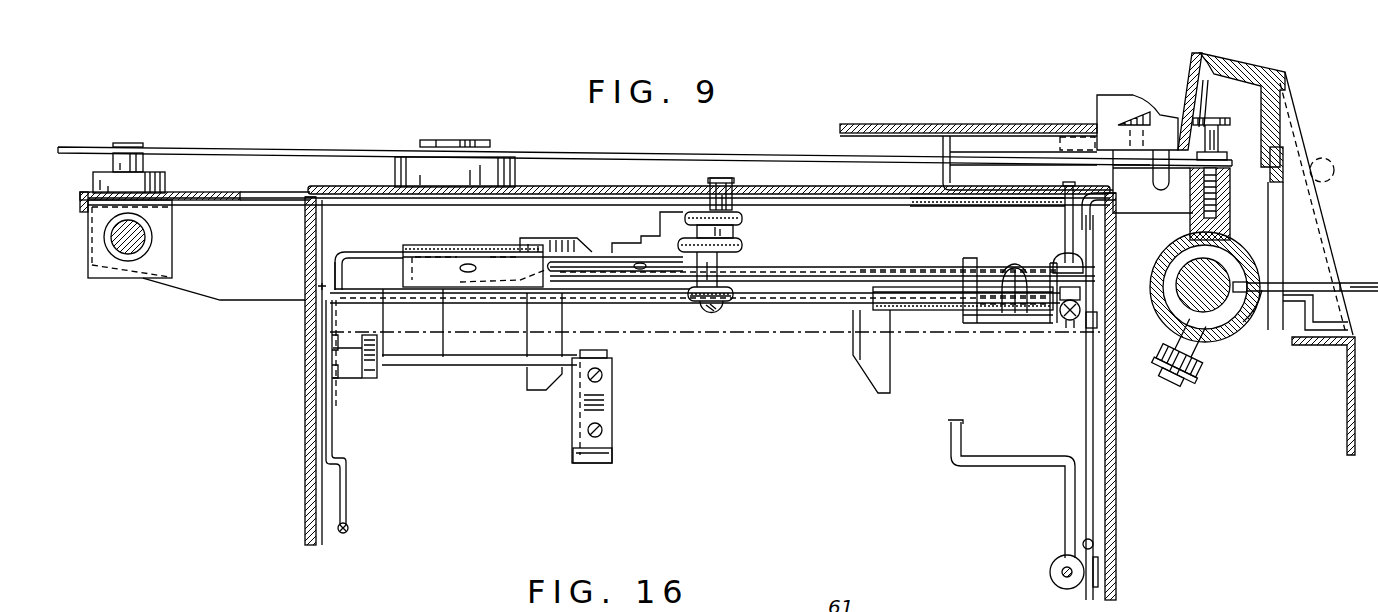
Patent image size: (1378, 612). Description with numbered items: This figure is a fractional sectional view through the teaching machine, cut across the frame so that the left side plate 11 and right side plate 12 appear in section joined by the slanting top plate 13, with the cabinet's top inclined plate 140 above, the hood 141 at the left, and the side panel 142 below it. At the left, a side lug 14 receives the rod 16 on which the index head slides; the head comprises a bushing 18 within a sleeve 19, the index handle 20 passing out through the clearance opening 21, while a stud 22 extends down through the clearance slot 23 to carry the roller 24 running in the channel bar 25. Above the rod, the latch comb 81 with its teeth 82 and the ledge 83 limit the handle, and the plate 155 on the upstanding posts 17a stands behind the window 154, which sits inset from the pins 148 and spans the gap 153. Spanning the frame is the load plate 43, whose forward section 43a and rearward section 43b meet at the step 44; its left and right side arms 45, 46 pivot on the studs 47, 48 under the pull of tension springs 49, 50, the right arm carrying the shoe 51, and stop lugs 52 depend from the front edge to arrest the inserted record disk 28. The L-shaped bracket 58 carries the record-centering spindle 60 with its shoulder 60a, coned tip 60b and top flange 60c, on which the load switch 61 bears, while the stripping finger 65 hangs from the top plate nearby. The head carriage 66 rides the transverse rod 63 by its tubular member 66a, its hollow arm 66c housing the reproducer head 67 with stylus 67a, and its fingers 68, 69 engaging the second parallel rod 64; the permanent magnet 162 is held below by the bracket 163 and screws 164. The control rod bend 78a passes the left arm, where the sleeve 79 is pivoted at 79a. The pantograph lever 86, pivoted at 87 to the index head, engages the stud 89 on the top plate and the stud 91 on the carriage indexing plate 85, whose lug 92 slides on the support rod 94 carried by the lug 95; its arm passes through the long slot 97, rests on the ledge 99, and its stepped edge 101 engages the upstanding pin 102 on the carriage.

The left side plate 11 is at (1116, 472).
The right side plate 12 is at (303, 449).
The top plate 13 is at (781, 193).
The side lug 14 is at (1167, 213).
The rod 16 is at (1211, 326).
The upstanding posts 17a is at (1208, 133).
The bushing 18 is at (1168, 328).
The sleeve 19 is at (1183, 240).
The index handle 20 is at (1375, 285).
The clearance opening 21 is at (1257, 275).
The stud 22 is at (1210, 352).
The clearance slot 23 is at (1244, 321).
The roller 24 is at (1198, 372).
The channel bar 25 is at (1183, 371).
The phonograph record disk 28 is at (738, 336).
The load plate 43 is at (794, 265).
The forward section 43a is at (866, 244).
The rearward right-half section 43b is at (372, 252).
The step 44 is at (337, 256).
The left side arm 45 is at (1093, 544).
The right side arm 46 is at (333, 432).
The stud 47 is at (1098, 320).
The stud 48 is at (305, 319).
The tension spring 49 is at (1093, 546).
The tension spring 50 is at (347, 529).
The shoe 51 is at (366, 380).
The stop lugs 52 is at (537, 377).
The L-shaped bracket 58 is at (639, 246).
The record-centering spindle 60 is at (724, 290).
The shoulder 60a is at (797, 335).
The coned tip 60b is at (708, 310).
The top flange 60c is at (744, 221).
The load switch 61 is at (556, 238).
The transverse rod 63 is at (430, 300).
The second parallel rod 64 is at (943, 277).
The stripping finger 65 is at (712, 183).
The head carriage 66 is at (978, 264).
The transverse tubular member 66a is at (900, 288).
The hollow arm 66c is at (1080, 258).
The reproducer head 67 is at (1062, 319).
The stylus 67a is at (1073, 328).
The finger 68 is at (1007, 262).
The second finger 69 is at (1013, 303).
The bend of control rod 78a is at (1043, 468).
The sleeve 79 is at (1062, 588).
The pivot 79a is at (1098, 580).
The latch comb 81 is at (1283, 152).
The teeth 82 is at (1287, 236).
The ledge 83 is at (1315, 318).
The carriage indexing plate 85 is at (223, 192).
The lever 86 is at (320, 147).
The pivot 87 is at (1215, 149).
The stud 89 is at (472, 138).
The stud 91 is at (141, 145).
The downwardly bent lug 92 is at (168, 263).
The support rod 94 is at (140, 250).
The lug 95 is at (251, 289).
The long slot 97 is at (305, 206).
The ledge 99 is at (1108, 226).
The stepped edge 101 is at (970, 205).
The upstanding pin 102 is at (1066, 184).
The top inclined plate 140 is at (957, 122).
The hood 141 is at (1283, 79).
The side panel 142 is at (1343, 438).
The pins 148 is at (1133, 110).
The gap 153 is at (1165, 125).
The window 154 is at (1178, 110).
The plate 155 is at (1204, 98).
The permanent magnet 162 is at (607, 358).
The bracket 163 is at (472, 366).
The screws 164 is at (497, 262).